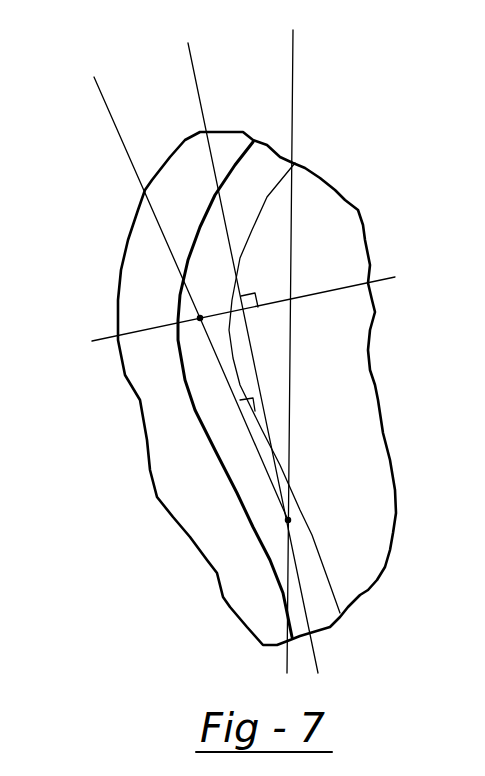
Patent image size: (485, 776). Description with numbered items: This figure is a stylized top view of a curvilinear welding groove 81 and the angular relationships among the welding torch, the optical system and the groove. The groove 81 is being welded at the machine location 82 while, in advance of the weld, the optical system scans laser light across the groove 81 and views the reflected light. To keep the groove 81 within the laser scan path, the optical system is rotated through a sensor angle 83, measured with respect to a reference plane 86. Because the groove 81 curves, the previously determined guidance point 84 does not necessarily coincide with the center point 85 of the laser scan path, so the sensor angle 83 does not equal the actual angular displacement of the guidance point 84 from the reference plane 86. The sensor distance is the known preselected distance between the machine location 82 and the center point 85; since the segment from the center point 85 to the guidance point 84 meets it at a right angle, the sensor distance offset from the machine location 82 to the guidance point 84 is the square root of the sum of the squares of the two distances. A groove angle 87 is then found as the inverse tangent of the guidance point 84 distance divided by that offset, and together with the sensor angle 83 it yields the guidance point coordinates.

The curvilinear welding groove 81 is at (257, 167).
The machine location 82 is at (288, 521).
The sensor angle 83 is at (260, 385).
The guidance point 84 is at (200, 318).
The center point of the laser scan path 85 is at (246, 293).
The reference plane 86 is at (295, 98).
The groove angle 87 is at (240, 404).